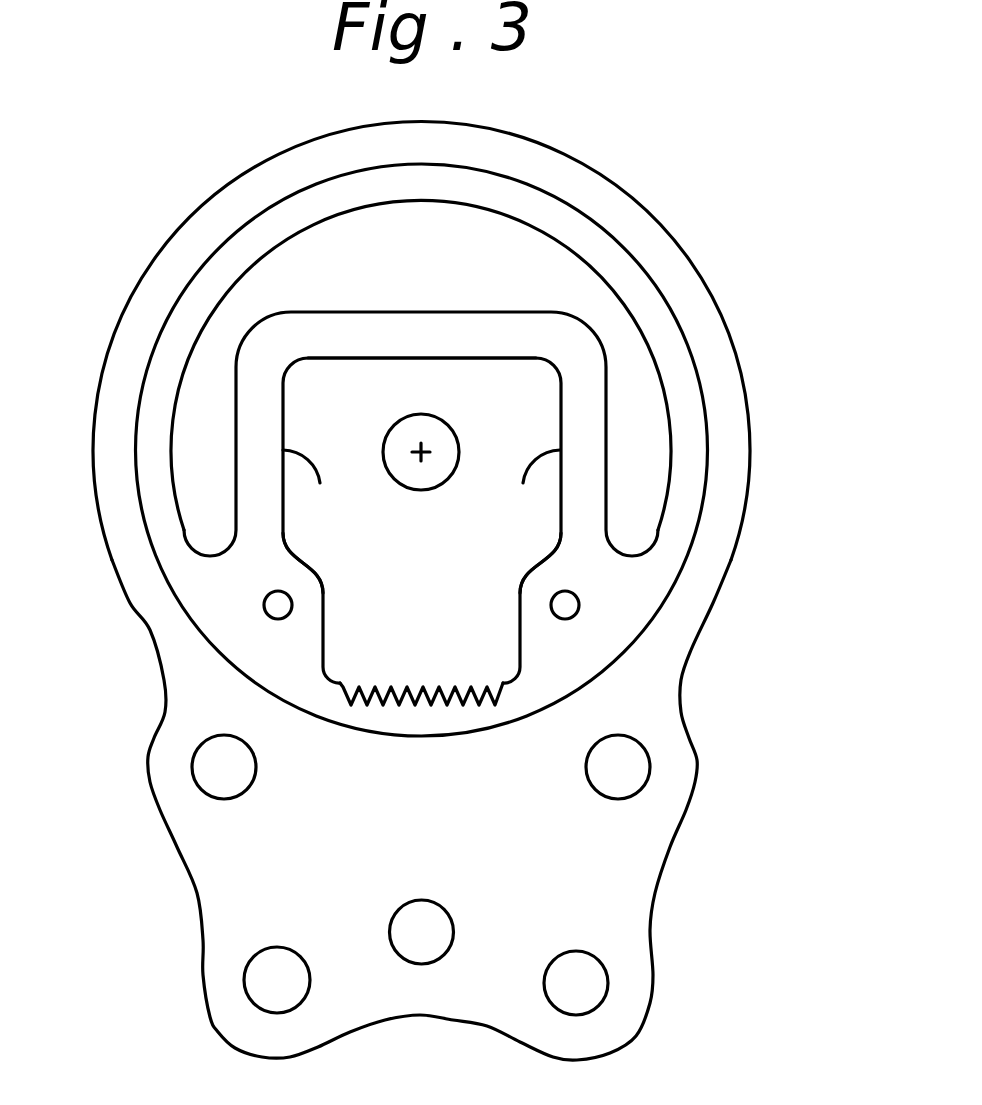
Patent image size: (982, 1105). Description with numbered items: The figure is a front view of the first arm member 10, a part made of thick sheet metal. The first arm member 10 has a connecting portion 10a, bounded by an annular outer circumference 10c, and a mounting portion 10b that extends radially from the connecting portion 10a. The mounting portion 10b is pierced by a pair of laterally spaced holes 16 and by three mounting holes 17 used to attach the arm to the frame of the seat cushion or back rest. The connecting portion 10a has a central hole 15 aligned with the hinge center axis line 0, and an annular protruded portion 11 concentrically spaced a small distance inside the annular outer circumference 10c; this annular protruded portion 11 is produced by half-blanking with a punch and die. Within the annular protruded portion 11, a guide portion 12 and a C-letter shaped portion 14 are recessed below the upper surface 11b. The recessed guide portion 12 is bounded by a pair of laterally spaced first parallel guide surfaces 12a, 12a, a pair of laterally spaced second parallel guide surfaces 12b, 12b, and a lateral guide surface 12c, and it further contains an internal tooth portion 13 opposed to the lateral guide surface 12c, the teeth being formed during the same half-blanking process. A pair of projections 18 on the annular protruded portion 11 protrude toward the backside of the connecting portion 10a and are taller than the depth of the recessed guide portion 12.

The hinge center axis line 0 is at (416, 448).
The first arm member 10 is at (684, 674).
The connecting portion 10a is at (698, 315).
The mounting portion 10b is at (630, 895).
The annular outer circumference 10c is at (270, 162).
The annular protruded portion 11 is at (565, 204).
The upper surface 11b is at (697, 450).
The guide portion 12 is at (437, 377).
The first parallel guide surfaces 12a is at (328, 627).
The second parallel guide surfaces 12b is at (421, 488).
The lateral guide surface 12c is at (385, 358).
The internal tooth portion 13 is at (397, 693).
The C-letter shaped portion 14 is at (195, 383).
The central hole 15 is at (447, 427).
The laterally spaced holes 16 is at (245, 780).
The mounting holes 17 is at (440, 943).
The projections 18 is at (264, 602).